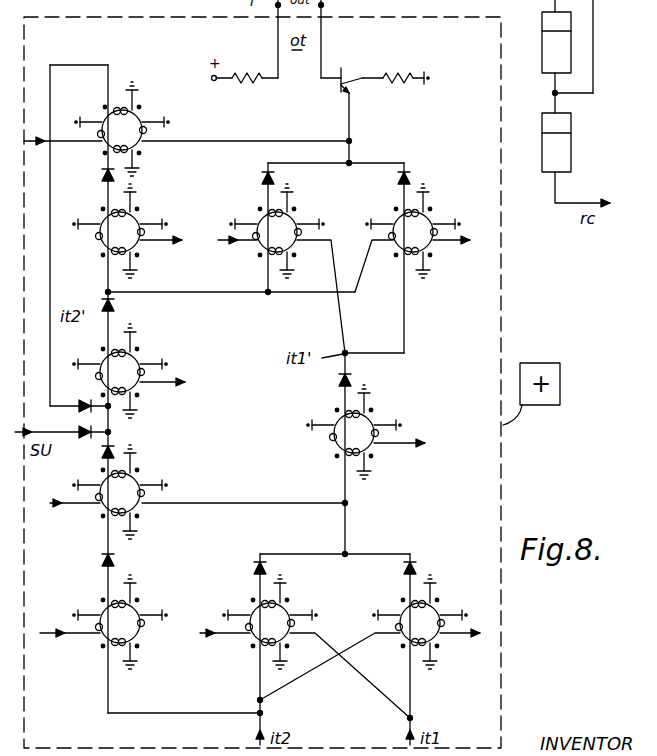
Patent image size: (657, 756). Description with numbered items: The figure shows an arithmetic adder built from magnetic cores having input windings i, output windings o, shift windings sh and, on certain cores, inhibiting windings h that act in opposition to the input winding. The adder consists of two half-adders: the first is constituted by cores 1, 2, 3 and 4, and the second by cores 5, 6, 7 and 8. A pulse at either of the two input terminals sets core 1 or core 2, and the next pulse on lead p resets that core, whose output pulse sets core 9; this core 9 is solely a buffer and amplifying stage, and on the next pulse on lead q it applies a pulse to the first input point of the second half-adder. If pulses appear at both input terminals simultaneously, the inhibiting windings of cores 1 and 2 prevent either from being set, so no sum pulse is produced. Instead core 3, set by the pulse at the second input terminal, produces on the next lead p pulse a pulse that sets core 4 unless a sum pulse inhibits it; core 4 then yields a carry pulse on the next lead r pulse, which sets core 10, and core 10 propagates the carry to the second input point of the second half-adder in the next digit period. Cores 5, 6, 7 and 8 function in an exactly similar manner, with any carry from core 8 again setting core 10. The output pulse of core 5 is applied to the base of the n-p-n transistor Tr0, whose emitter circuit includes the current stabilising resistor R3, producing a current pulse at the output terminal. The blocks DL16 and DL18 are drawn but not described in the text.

The core 1 is at (400, 648).
The core 2 is at (290, 612).
The core 3 is at (143, 627).
The core 4 is at (104, 516).
The core 5 is at (400, 254).
The core 6 is at (292, 222).
The core 7 is at (100, 228).
The core 8 is at (106, 118).
The core 9 is at (336, 444).
The core 10 is at (100, 372).
The n-p-n transistor Tr0 is at (344, 46).
The current stabilising resistor R3 is at (395, 89).
The delay line DL16 is at (537, 142).
The delay line DL18 is at (537, 56).